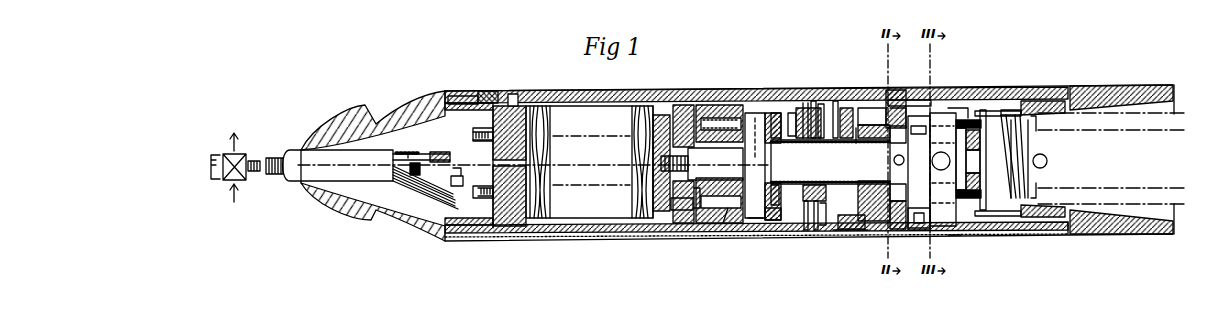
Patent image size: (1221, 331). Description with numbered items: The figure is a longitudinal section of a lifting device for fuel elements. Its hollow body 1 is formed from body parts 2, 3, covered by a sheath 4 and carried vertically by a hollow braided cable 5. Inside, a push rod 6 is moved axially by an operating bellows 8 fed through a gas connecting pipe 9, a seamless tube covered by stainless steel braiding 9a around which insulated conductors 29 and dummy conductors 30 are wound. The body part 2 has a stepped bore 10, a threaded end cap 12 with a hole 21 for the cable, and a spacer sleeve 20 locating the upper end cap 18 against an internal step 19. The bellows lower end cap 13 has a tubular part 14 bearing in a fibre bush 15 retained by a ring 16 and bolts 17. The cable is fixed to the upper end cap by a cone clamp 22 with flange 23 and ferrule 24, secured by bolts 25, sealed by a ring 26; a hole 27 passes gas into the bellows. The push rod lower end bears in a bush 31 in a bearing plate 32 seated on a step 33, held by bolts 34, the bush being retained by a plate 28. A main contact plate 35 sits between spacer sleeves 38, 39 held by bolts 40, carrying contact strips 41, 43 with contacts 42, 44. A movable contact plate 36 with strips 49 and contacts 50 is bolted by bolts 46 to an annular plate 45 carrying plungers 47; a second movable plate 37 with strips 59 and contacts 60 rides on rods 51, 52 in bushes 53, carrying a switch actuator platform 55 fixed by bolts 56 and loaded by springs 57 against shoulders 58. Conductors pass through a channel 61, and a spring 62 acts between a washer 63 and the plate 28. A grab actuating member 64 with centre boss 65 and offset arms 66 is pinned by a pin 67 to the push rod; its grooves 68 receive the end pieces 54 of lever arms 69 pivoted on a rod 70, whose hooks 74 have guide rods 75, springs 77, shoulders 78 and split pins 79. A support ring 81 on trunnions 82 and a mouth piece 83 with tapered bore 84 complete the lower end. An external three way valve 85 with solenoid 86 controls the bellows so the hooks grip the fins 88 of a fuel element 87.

The hollow mild steel body 1 is at (722, 82).
The body part 2 is at (548, 84).
The body part 3 is at (850, 224).
The mild steel sheath 4 is at (1040, 228).
The hollow braided cable 5 is at (282, 142).
The push rod 6 is at (790, 160).
The operating bellows 8 is at (585, 167).
The gas connecting pipe 9 is at (256, 152).
The stainless steel braiding 9a is at (397, 176).
The stepped bore 10 is at (675, 96).
The threaded end cap 12 is at (333, 112).
The lower end cap 13 is at (652, 106).
The tubular part 14 is at (715, 140).
The graphite loaded fibre bush 15 is at (718, 216).
The ring 16 is at (678, 215).
The bolts 17 is at (694, 216).
The upper end cap 18 is at (506, 226).
The internal step 19 is at (503, 86).
The spacer sleeve 20 is at (482, 83).
The hole 21 is at (300, 138).
The cone clamp 22 is at (465, 176).
The flange 23 is at (478, 222).
The clamping ferrule 24 is at (402, 144).
The bolts 25 is at (455, 88).
The ring 26 is at (468, 128).
The hole 27 is at (530, 150).
The plate 28 is at (880, 82).
The P.T.F.E. insulated conductors 29 is at (425, 190).
The P.T.F.E. dummy conductors 30 is at (390, 143).
The second graphite loaded fibre bush 31 is at (868, 134).
The bearing plate 32 is at (872, 98).
The internal step 33 is at (857, 222).
The bolts 34 is at (866, 116).
The main contact plate 35 is at (801, 223).
The movable contact plate 36 is at (764, 213).
The movable contact plate 37 is at (815, 218).
The spacer sleeve 38 is at (738, 96).
The spacer sleeve 39 is at (856, 98).
The bolts 40 is at (818, 96).
The contact strips 41 is at (806, 92).
The contacts 42 is at (797, 95).
The contact strips 43 is at (836, 100).
The contacts 44 is at (838, 96).
The annular plate 45 is at (746, 212).
The bolts 46 is at (755, 165).
The plungers 47 is at (711, 96).
The contact strips 49 is at (765, 104).
The contacts 50 is at (786, 100).
The rod 51 is at (884, 222).
The rod 52 is at (890, 98).
The fibre bushes 53 is at (858, 172).
The cylindrical end piece 54 is at (940, 104).
The switch actuator platform 55 is at (972, 140).
The bolts 56 is at (972, 124).
The compression spring 57 is at (908, 160).
The shoulder 58 is at (906, 92).
The contact strips 59 is at (830, 162).
The contacts 60 is at (824, 130).
The channel 61 is at (628, 229).
The compression spring 62 is at (781, 180).
The washer 63 is at (782, 137).
The grab actuating member 64 is at (896, 222).
The centre boss 65 is at (900, 166).
The offset arms 66 is at (948, 98).
The pin 67 is at (899, 138).
The groove 68 is at (912, 90).
The lever arms 69 is at (947, 228).
The rod 70 is at (918, 196).
The hooks 74 is at (999, 100).
The guide rods 75 is at (953, 108).
The compression springs 77 is at (966, 108).
The shoulders 78 is at (976, 100).
The split pins 79 is at (943, 169).
The cylindrical support ring 81 is at (1035, 93).
The trunnions 82 is at (1039, 152).
The cylindrical mouth piece 83 is at (1120, 79).
The tapered bore and entry 84 is at (1140, 226).
The three way valve 85 is at (236, 144).
The solenoid 86 is at (205, 145).
The fuel element 87 is at (1037, 155).
The fins 88 is at (1003, 155).